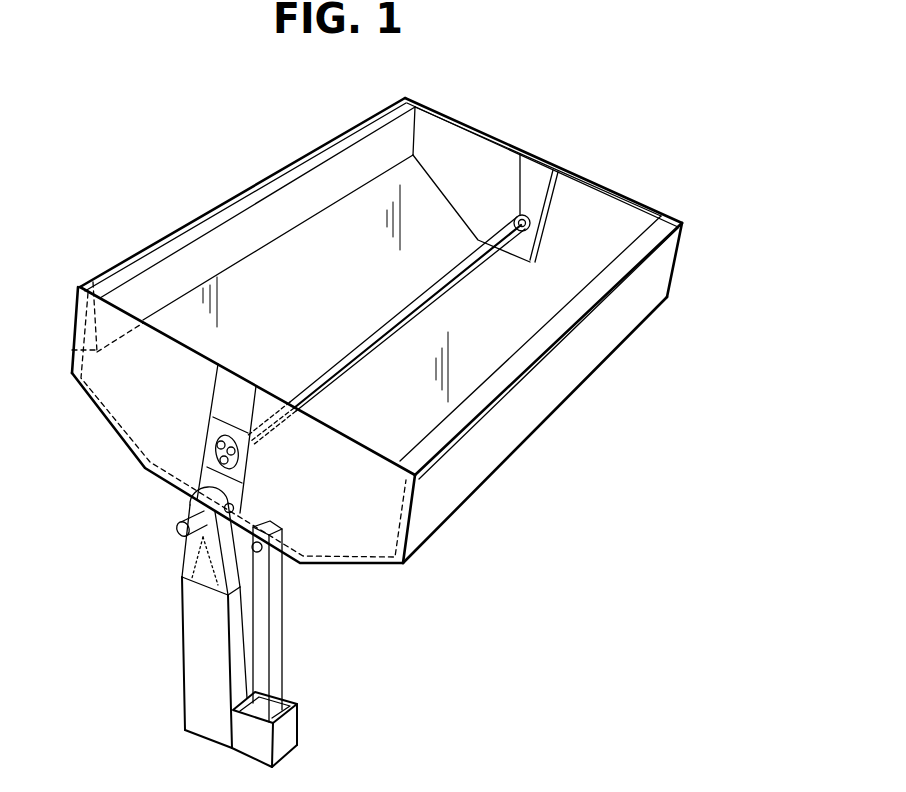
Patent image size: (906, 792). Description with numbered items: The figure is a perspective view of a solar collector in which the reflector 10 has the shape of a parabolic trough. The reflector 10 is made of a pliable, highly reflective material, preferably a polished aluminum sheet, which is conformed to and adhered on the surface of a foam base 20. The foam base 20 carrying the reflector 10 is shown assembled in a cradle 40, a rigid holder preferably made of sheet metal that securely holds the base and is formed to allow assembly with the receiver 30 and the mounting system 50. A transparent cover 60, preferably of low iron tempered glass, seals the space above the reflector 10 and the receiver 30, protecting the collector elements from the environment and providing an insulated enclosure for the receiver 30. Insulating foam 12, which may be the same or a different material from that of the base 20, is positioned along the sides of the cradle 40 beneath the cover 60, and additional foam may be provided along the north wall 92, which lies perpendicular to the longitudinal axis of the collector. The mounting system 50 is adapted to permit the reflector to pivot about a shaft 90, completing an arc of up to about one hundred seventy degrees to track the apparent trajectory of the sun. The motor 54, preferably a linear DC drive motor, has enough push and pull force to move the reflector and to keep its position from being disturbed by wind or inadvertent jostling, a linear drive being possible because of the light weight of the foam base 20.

The reflector 10 is at (146, 397).
The insulating foam 12 is at (149, 296).
The foam base 20 is at (374, 550).
The receiver 30 is at (597, 273).
The cradle 40 is at (549, 417).
The mounting system 50 is at (192, 655).
The motor 54 is at (300, 668).
The transparent cover 60 is at (315, 317).
The shaft 90 is at (178, 536).
The north wall 92 is at (570, 242).